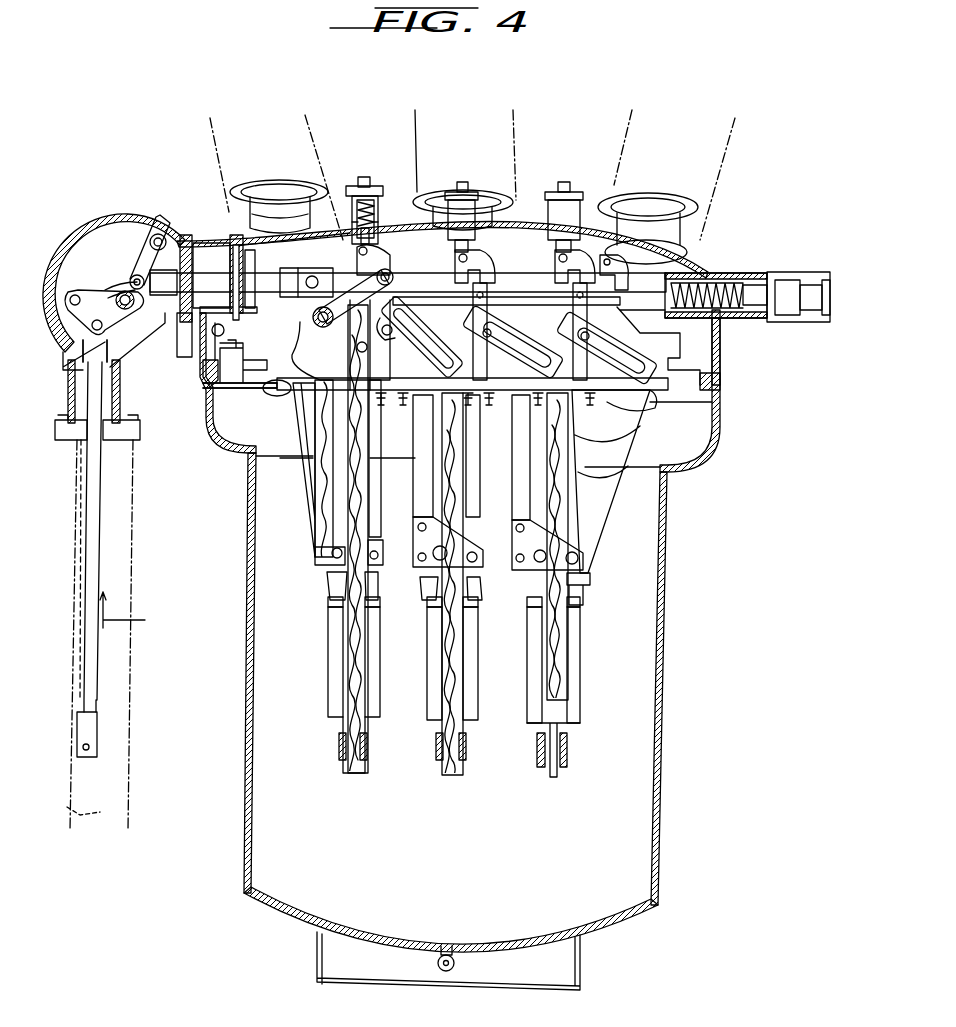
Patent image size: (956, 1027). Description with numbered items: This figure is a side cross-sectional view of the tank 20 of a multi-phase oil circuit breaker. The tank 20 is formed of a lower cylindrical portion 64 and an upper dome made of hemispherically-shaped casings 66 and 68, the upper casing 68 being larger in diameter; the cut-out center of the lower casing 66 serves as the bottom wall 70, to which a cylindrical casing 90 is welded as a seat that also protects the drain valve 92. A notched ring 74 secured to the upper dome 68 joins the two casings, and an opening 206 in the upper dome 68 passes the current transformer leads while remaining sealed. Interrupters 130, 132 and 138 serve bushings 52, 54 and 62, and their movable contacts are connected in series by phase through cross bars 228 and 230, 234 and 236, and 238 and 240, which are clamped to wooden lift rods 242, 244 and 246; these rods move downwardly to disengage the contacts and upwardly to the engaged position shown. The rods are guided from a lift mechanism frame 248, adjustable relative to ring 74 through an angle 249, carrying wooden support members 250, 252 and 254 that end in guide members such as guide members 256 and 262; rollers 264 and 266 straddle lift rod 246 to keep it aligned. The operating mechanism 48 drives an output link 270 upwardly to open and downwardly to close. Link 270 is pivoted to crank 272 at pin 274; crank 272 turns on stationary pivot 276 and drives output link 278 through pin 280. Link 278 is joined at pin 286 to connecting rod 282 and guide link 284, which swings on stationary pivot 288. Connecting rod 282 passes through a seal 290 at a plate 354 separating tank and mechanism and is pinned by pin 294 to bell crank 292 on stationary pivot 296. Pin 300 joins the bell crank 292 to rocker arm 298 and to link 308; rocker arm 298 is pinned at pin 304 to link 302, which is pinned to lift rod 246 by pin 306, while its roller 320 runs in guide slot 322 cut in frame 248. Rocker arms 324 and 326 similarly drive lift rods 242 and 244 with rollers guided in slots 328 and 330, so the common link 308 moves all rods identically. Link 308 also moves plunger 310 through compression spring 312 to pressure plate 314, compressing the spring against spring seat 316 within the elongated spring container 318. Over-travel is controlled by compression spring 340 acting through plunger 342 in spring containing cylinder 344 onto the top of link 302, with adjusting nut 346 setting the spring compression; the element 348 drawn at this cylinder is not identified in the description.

The tank 20 is at (668, 600).
The operating mechanism 48 is at (130, 648).
The bushing 52 is at (505, 125).
The bushing 54 is at (712, 157).
The bushing 62 is at (307, 122).
The lower cylindrical portion 64 is at (665, 700).
The lower hemispherical casing 66 is at (703, 456).
The upper hemispherical casing 68 is at (533, 218).
The bottom wall 70 is at (596, 922).
The notched ring 74 is at (204, 372).
The cylindrical casing 90 is at (317, 962).
The drain valve 92 is at (447, 972).
The interrupter 130 is at (470, 700).
The interrupter 132 is at (578, 695).
The interrupter 138 is at (330, 687).
The opening 206 is at (226, 331).
The cross bar 228 is at (436, 757).
The cross bar 230 is at (467, 755).
The cross bar 234 is at (532, 768).
The cross bar 236 is at (568, 752).
The cross bar 238 is at (338, 742).
The cross bar 240 is at (369, 750).
The vertical lift rod 242 is at (447, 668).
The wooden lift rod 244 is at (588, 608).
The wooden lift rod 246 is at (350, 660).
The lift mechanism frame 248 is at (510, 380).
The angle 249 is at (268, 384).
The wooden support member 250 is at (420, 485).
The wooden support member 252 is at (524, 475).
The wooden support member 254 is at (318, 488).
The guide member 256 is at (380, 548).
The guide member 262 is at (512, 533).
The roller 264 is at (330, 560).
The roller 266 is at (380, 572).
The output link 270 is at (99, 535).
The crank 272 is at (115, 312).
The pin 274 is at (102, 325).
The stationary pivot 276 is at (135, 301).
The output link 278 is at (118, 282).
The pin 280 is at (78, 295).
The connecting rod 282 is at (212, 285).
The guide link 284 is at (148, 250).
The pin 286 is at (156, 273).
The stationary pivot 288 is at (162, 236).
The seal 290 is at (241, 258).
The bell crank 292 is at (356, 296).
The pin 294 is at (320, 275).
The stationary pivot 296 is at (312, 316).
The rocker arm 298 is at (372, 260).
The pin 300 is at (390, 288).
The link 302 is at (341, 340).
The pin 304 is at (378, 252).
The pin 306 is at (356, 348).
The link 308 is at (431, 283).
The plunger 310 is at (612, 292).
The compression spring 312 is at (705, 285).
The pressure plate 314 is at (745, 283).
The spring seat 316 is at (660, 309).
The spring container 318 is at (737, 312).
The roller 320 is at (393, 330).
The guide slot 322 is at (433, 350).
The rocker arm 324 is at (487, 265).
The rocker arm 326 is at (556, 273).
The slot 328 is at (511, 345).
The slot 330 is at (598, 350).
The compression spring 340 is at (376, 217).
The plunger 342 is at (352, 225).
The spring containing cylinder 344 is at (356, 195).
The adjusting nut 346 is at (365, 192).
The slot 348 is at (372, 200).
The plate 354 is at (234, 245).